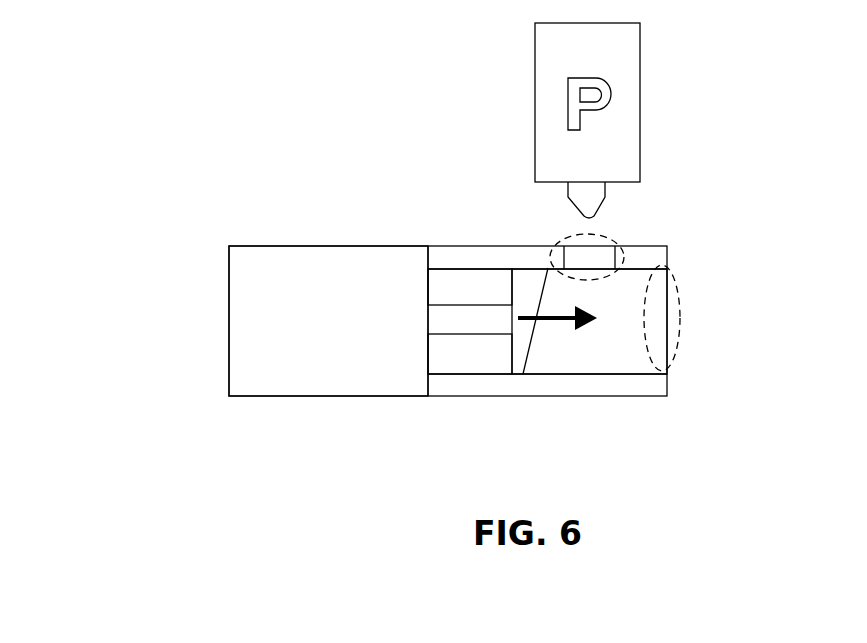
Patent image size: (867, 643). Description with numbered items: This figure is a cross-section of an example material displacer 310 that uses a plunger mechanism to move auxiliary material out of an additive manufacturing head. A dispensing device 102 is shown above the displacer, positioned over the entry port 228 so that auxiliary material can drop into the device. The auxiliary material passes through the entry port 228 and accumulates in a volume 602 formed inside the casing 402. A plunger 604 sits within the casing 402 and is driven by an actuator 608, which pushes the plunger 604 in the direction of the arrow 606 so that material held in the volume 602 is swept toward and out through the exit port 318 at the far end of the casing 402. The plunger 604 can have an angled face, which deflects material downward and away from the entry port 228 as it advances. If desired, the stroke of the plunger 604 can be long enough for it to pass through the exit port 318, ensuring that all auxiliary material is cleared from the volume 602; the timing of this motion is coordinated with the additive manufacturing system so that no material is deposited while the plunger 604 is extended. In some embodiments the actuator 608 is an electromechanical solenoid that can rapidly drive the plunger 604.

The writing instrument 102 is at (506, 83).
The entry port 228 is at (577, 235).
The material displacer 310 is at (104, 401).
The exit port 318 is at (679, 338).
The casing 402 is at (458, 389).
The volume 602 is at (625, 288).
The plunger 604 is at (523, 342).
The arrow 606 is at (557, 320).
The actuator 608 is at (345, 369).